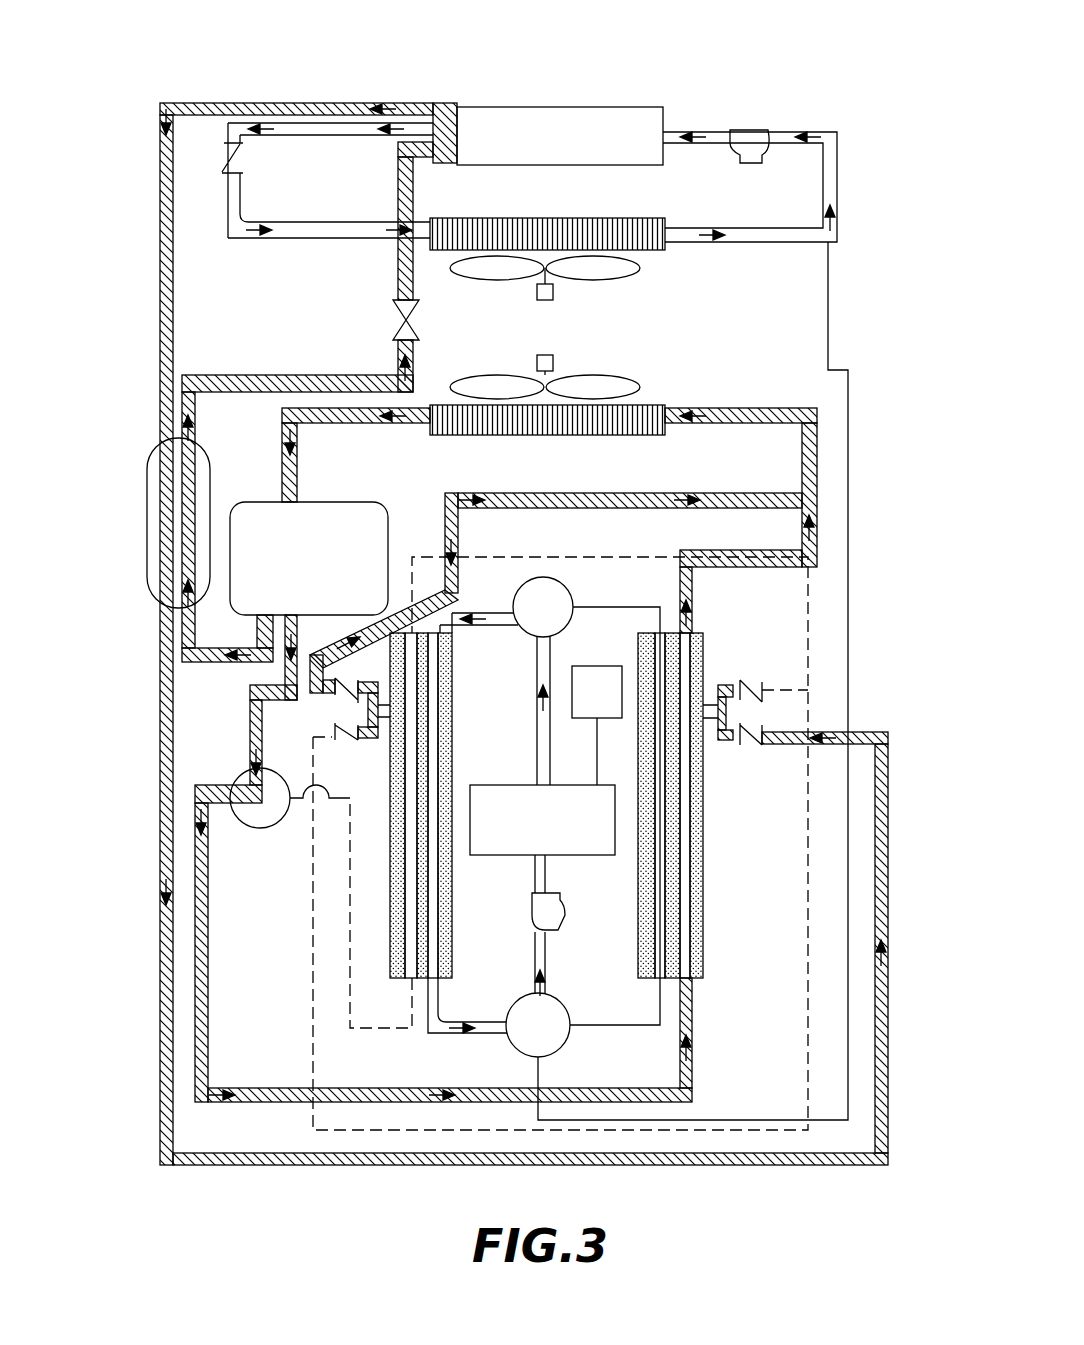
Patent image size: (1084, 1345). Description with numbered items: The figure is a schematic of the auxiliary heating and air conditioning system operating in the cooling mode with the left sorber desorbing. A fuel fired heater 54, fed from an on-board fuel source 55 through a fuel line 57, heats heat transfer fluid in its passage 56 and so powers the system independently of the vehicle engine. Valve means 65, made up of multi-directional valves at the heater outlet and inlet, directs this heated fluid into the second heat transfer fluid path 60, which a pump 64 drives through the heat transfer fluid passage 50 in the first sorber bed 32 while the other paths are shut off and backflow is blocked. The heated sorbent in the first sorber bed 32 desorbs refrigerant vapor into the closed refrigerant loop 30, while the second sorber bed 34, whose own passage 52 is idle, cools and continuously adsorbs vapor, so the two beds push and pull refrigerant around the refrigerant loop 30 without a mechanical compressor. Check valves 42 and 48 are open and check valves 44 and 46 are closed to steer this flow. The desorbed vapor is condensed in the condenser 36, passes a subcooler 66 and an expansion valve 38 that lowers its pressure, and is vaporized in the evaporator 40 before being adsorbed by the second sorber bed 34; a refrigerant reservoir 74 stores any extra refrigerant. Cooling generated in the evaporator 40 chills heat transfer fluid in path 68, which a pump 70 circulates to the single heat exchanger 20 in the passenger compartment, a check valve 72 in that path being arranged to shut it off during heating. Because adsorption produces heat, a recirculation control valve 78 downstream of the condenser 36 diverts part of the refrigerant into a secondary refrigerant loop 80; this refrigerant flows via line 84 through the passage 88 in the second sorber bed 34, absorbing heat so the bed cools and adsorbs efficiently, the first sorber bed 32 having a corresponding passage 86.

The heat exchanger 20 is at (647, 218).
The refrigerant loop 30 is at (835, 390).
The first sorber bed 32 is at (388, 922).
The second sorber bed 34 is at (706, 960).
The condenser 36 is at (657, 383).
The expansion valve 38 is at (493, 595).
The evaporator 40 is at (492, 106).
The check valve 42 is at (355, 688).
The check valve 44 is at (340, 735).
The check valve 46 is at (750, 682).
The check valve 48 is at (754, 740).
The heat transfer fluid passage 50 is at (434, 960).
The heat transfer fluid passage 52 is at (664, 950).
The fuel fired heater 54 is at (598, 856).
The fuel source 55 is at (597, 665).
The heat transfer fluid passage 56 is at (545, 733).
The fuel line 57 is at (597, 760).
The second heat transfer fluid path 60 is at (403, 345).
The pump 64 is at (551, 922).
The valve means 65 is at (564, 581).
The subcooler 66 is at (160, 447).
The path 68 is at (327, 126).
The pump 70 is at (748, 130).
The check valve 72 is at (224, 148).
The refrigerant reservoir 74 is at (240, 565).
The recirculation control valve 78 is at (248, 812).
The secondary refrigerant loop 80 is at (228, 743).
The line 84 is at (200, 958).
The passage 86 is at (406, 960).
The passage 88 is at (688, 884).